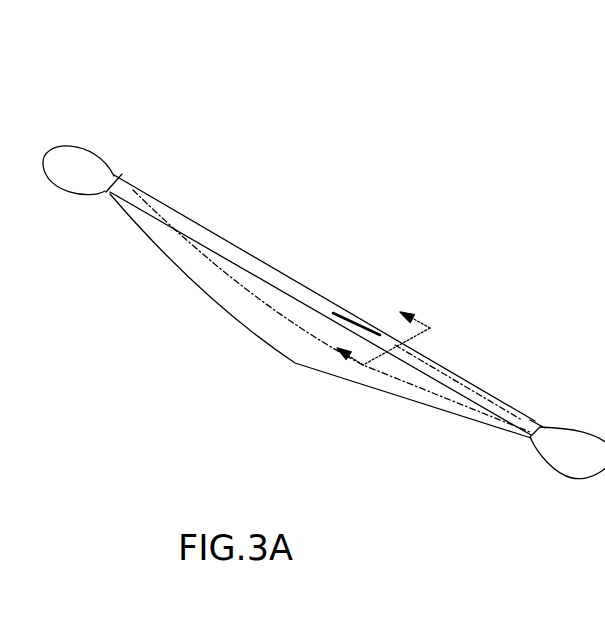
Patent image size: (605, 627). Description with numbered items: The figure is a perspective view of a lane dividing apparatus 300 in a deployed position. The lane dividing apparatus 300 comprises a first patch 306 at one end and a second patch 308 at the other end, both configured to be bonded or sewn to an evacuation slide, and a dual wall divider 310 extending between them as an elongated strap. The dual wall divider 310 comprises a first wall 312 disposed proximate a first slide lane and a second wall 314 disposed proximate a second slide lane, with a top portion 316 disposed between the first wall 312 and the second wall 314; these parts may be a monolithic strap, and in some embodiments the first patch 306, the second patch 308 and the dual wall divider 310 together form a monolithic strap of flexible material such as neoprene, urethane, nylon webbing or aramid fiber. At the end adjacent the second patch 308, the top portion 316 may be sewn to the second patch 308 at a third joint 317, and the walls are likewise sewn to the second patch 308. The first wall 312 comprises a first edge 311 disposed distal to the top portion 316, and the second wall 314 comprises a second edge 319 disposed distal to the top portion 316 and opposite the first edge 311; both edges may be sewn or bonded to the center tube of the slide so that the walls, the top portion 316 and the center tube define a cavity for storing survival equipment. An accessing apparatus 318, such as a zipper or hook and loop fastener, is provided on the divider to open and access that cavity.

The lane dividing apparatus 300 is at (267, 198).
The first patch 306 is at (77, 163).
The second patch 308 is at (570, 445).
The dual wall divider 310 is at (251, 306).
The first edge 311 is at (317, 367).
The first wall 312 is at (196, 258).
The second wall 314 is at (335, 302).
The top portion 316 is at (286, 278).
The third joint 317 is at (534, 425).
The accessing apparatus 318 is at (362, 328).
The second edge 319 is at (285, 313).